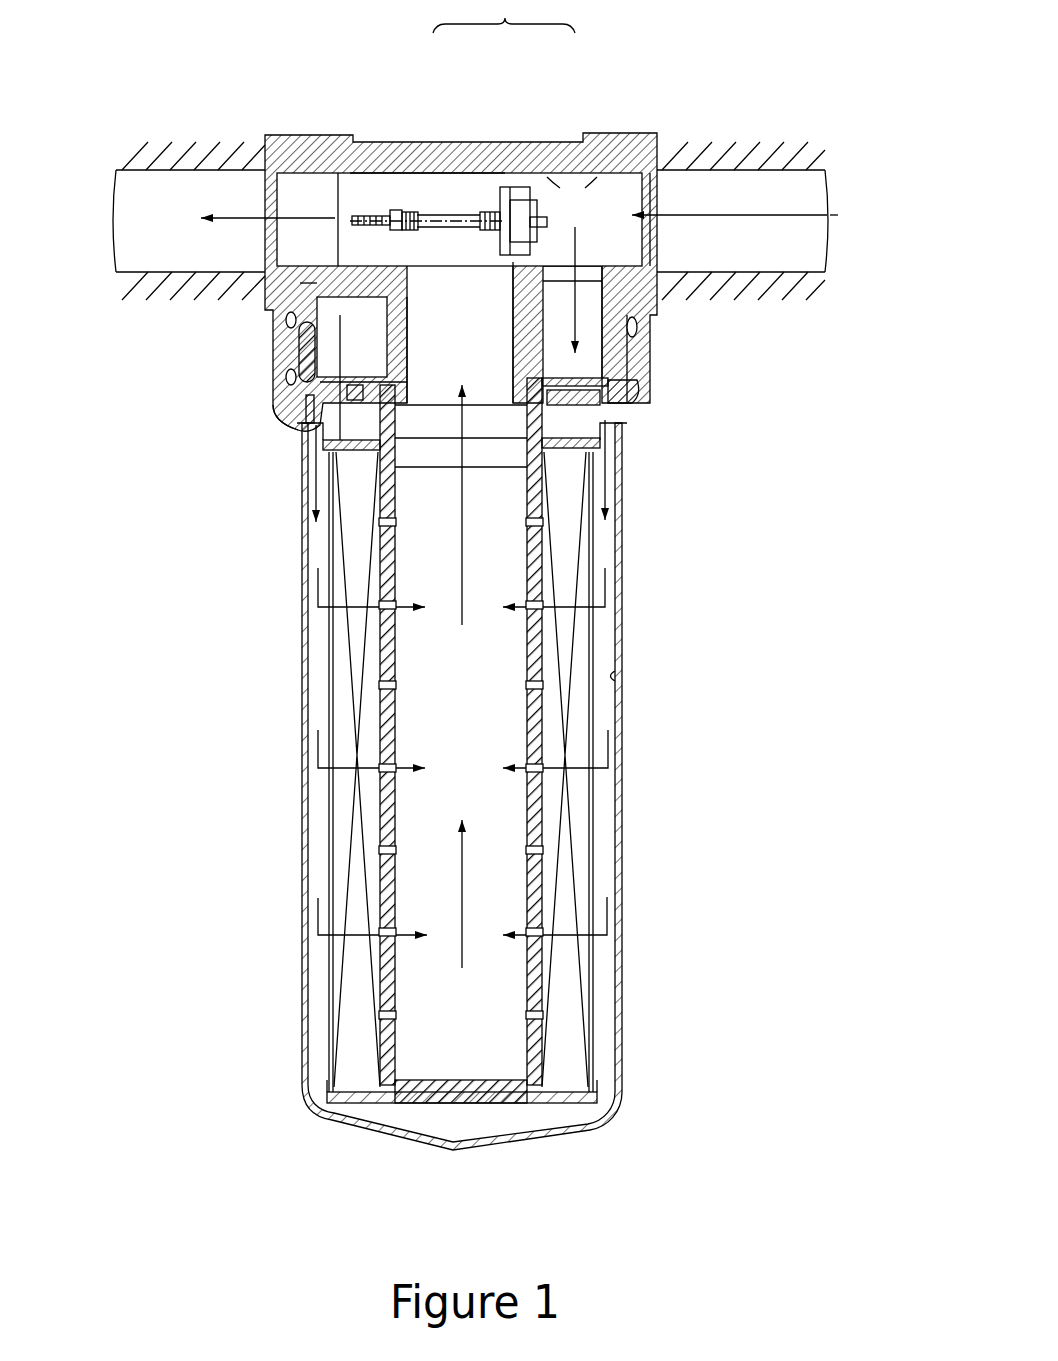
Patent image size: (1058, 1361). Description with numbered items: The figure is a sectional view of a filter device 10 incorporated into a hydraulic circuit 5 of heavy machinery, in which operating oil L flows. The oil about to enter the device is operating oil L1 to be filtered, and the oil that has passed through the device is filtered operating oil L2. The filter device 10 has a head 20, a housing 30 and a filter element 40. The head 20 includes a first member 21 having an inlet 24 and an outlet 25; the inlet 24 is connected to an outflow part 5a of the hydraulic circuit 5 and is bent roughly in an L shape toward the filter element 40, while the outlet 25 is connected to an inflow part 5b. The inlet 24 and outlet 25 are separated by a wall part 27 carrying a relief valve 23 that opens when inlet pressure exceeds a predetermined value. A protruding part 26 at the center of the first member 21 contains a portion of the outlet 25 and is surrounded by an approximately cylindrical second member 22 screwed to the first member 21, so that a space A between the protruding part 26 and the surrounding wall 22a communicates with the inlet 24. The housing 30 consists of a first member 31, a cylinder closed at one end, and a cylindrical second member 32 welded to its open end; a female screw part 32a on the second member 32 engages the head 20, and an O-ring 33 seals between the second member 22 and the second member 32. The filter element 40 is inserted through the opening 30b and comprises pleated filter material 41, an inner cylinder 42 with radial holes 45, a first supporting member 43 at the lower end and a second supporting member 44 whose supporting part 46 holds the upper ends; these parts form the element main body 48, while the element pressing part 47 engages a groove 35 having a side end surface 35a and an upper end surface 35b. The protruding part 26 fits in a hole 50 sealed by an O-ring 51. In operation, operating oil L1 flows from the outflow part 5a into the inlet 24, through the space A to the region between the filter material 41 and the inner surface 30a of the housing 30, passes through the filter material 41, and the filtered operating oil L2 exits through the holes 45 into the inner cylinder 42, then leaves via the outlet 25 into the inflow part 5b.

The hydraulic circuit 5 is at (470, 187).
The outflow part 5a is at (774, 252).
The inflow part 5b is at (215, 188).
The filter device 10 is at (626, 638).
The head 20 is at (258, 289).
The first member 21 is at (583, 137).
The second member 22 is at (634, 358).
The surrounding wall 22a is at (293, 397).
The relief valve 23 is at (477, 213).
The inlet 24 is at (612, 235).
The outlet 25 is at (402, 200).
The protruding part 26 is at (407, 347).
The wall part 27 is at (507, 263).
The housing 30 is at (627, 556).
The inner surface 30a is at (621, 677).
The opening 30b is at (273, 320).
The first member 31 is at (624, 806).
The second member 32 is at (639, 430).
The female screw part 32a is at (293, 367).
The O-ring 33 is at (637, 322).
The groove 35 is at (287, 425).
The side end surface 35a is at (642, 400).
The upper end surface 35b is at (313, 283).
The filter element 40 is at (333, 641).
The filter material 41 is at (345, 830).
The inner cylinder 42 is at (537, 882).
The first supporting member 43 is at (517, 1097).
The second supporting member 44 is at (527, 450).
The holes 45 is at (393, 523).
The supporting part 46 is at (393, 448).
The element pressing part 47 is at (397, 380).
The element main body 48 is at (599, 623).
The hole 50 is at (461, 496).
The O-ring 51 is at (397, 383).
The space A is at (363, 330).
The operating oil L is at (504, 16).
The operating oil to be filtered L1 is at (700, 207).
The filtered operating oil L2 is at (237, 218).